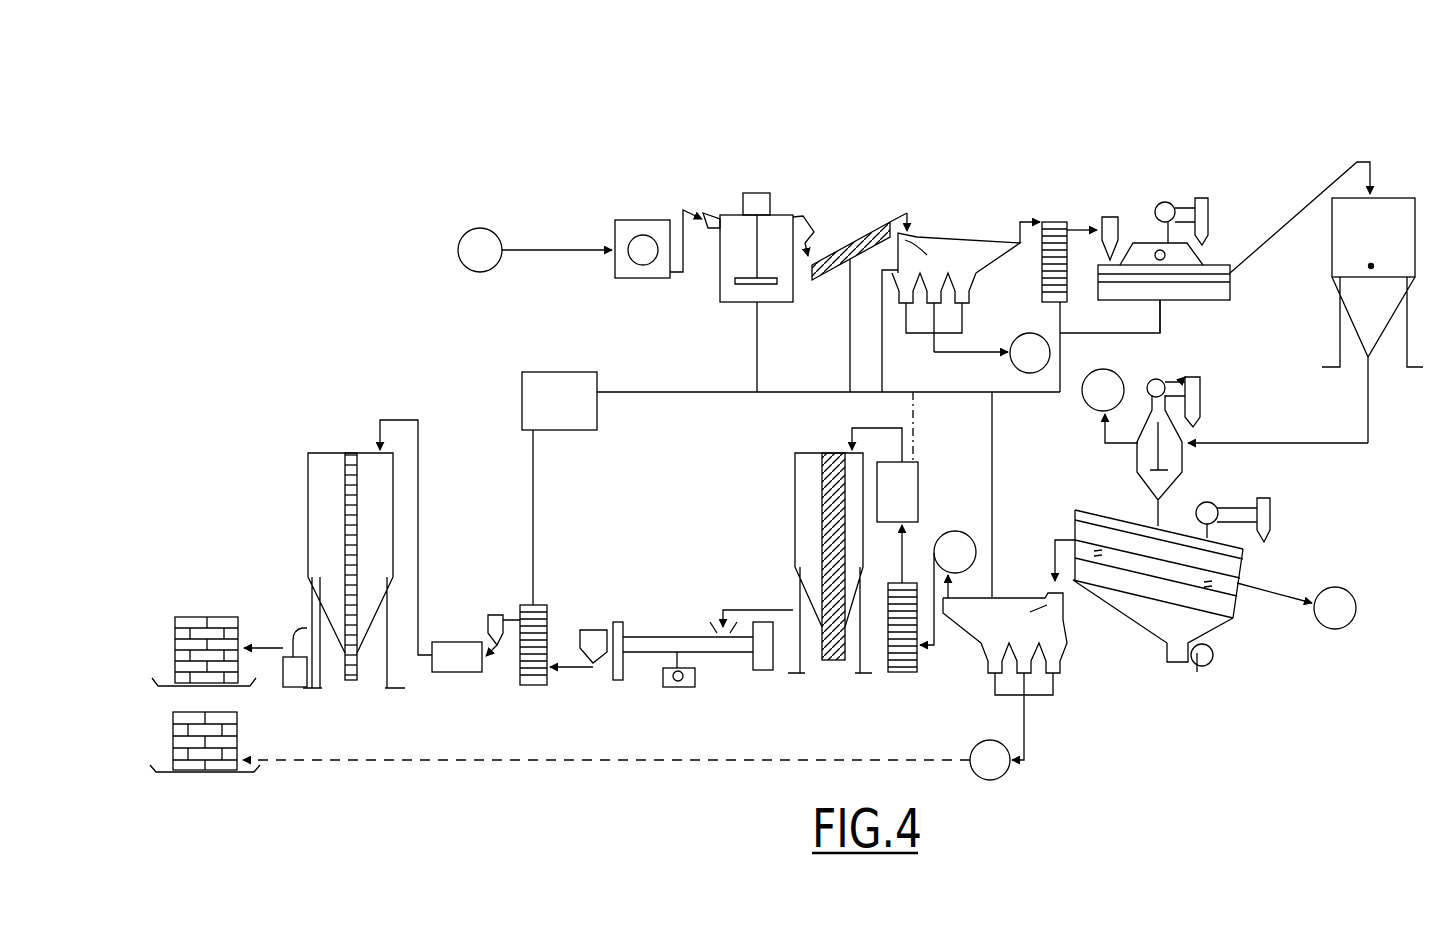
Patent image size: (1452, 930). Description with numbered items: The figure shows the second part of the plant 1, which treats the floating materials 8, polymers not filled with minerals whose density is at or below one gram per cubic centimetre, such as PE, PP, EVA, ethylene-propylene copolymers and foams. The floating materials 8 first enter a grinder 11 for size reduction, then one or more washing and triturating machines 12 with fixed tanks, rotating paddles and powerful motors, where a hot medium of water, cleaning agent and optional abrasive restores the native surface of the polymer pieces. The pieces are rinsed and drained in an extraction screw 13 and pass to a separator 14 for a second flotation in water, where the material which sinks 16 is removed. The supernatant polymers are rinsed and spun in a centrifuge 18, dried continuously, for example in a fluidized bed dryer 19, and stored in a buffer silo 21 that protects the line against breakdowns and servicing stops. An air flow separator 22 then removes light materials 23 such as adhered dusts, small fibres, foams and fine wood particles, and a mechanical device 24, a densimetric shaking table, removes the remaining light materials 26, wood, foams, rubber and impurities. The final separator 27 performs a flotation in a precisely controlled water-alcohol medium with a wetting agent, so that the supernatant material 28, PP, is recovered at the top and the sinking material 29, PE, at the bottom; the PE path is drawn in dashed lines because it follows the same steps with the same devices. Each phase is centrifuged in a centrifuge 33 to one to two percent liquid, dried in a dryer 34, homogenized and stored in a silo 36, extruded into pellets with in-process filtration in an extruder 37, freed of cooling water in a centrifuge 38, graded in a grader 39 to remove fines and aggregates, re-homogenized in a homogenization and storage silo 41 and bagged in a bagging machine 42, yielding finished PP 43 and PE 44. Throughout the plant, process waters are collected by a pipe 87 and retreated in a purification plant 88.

The plant 1 is at (905, 118).
The floating materials 8 is at (535, 250).
The grinder 11 is at (655, 219).
The washing and triturating machine 12 is at (788, 213).
The extraction screw 13 is at (866, 225).
The separator 14 is at (977, 237).
The material which sinks 16 is at (992, 353).
The centrifuge 18 is at (1063, 220).
The fluidized bed dryer 19 is at (1170, 208).
The buffer silo 21 is at (1326, 302).
The separator 22 is at (1202, 403).
The light materials 23 is at (1110, 406).
The mechanical device 24 is at (1242, 562).
The light materials 26 is at (1296, 606).
The separator 27 is at (1012, 595).
The supernatant material 28 is at (948, 588).
The sinking material 29 is at (626, 760).
The centrifuge 33 is at (904, 673).
The dryer 34 is at (918, 478).
The silo 36 is at (793, 483).
The extruder 37 is at (718, 660).
The centrifuge 38 is at (543, 600).
The grader 39 is at (458, 640).
The homogenization and storage silo 41 is at (332, 453).
The bagging machine 42 is at (297, 690).
The PP 43 is at (208, 616).
The PE 44 is at (222, 772).
The pipe 87 is at (712, 392).
The purification plant 88 is at (588, 431).